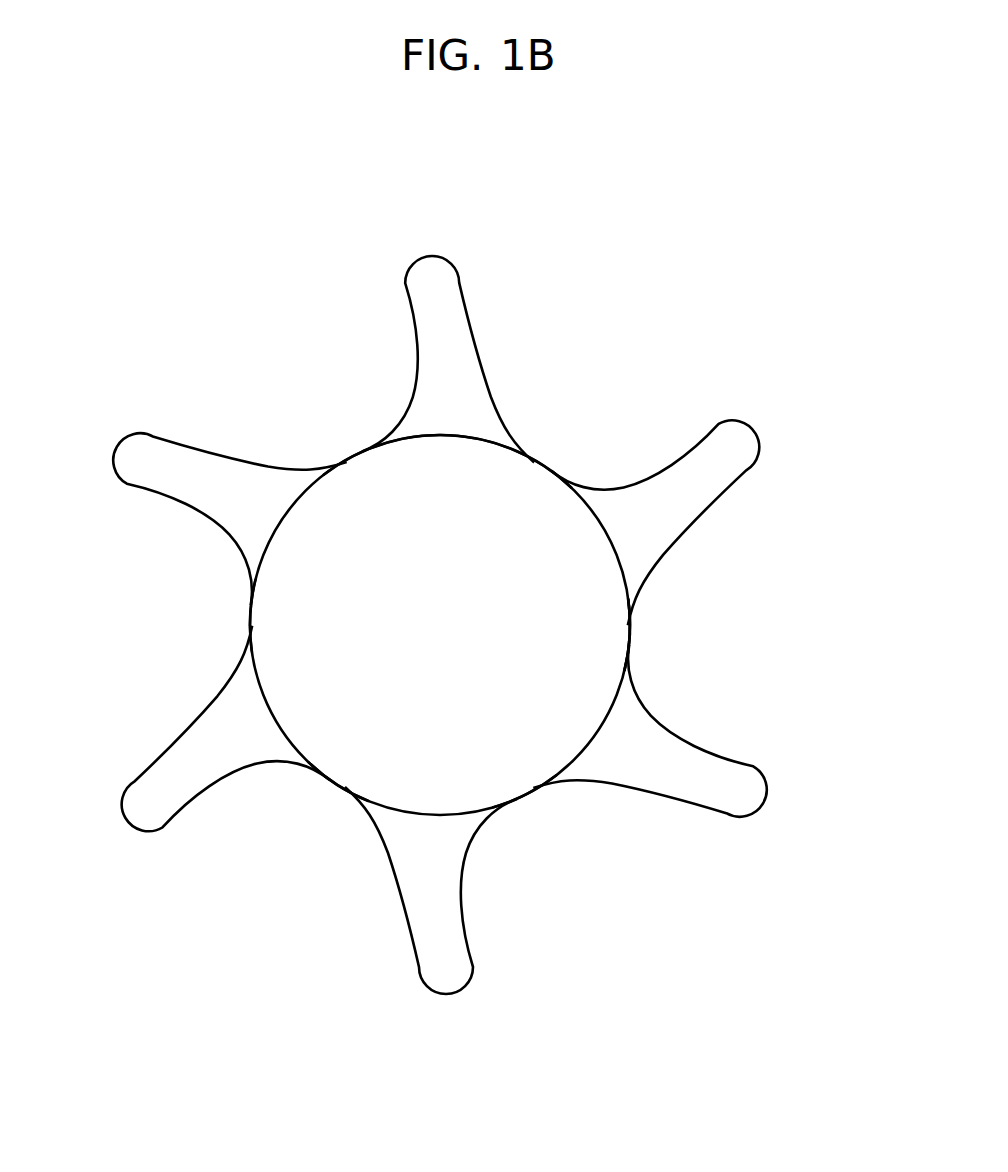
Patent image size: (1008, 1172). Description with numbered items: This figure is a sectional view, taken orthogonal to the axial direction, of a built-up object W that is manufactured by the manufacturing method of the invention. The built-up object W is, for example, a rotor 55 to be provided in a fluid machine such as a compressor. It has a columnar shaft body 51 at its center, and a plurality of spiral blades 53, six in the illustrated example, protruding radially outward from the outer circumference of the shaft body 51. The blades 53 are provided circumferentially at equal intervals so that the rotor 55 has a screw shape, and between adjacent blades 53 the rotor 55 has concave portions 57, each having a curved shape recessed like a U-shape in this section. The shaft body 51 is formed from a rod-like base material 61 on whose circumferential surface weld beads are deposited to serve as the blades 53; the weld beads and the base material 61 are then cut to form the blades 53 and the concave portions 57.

The built-up object W is at (700, 304).
The shaft body 51 is at (282, 568).
The blades 53 is at (440, 283).
The rotor 55 is at (706, 613).
The concave portions 57 is at (355, 460).
The base material 61 is at (450, 433).